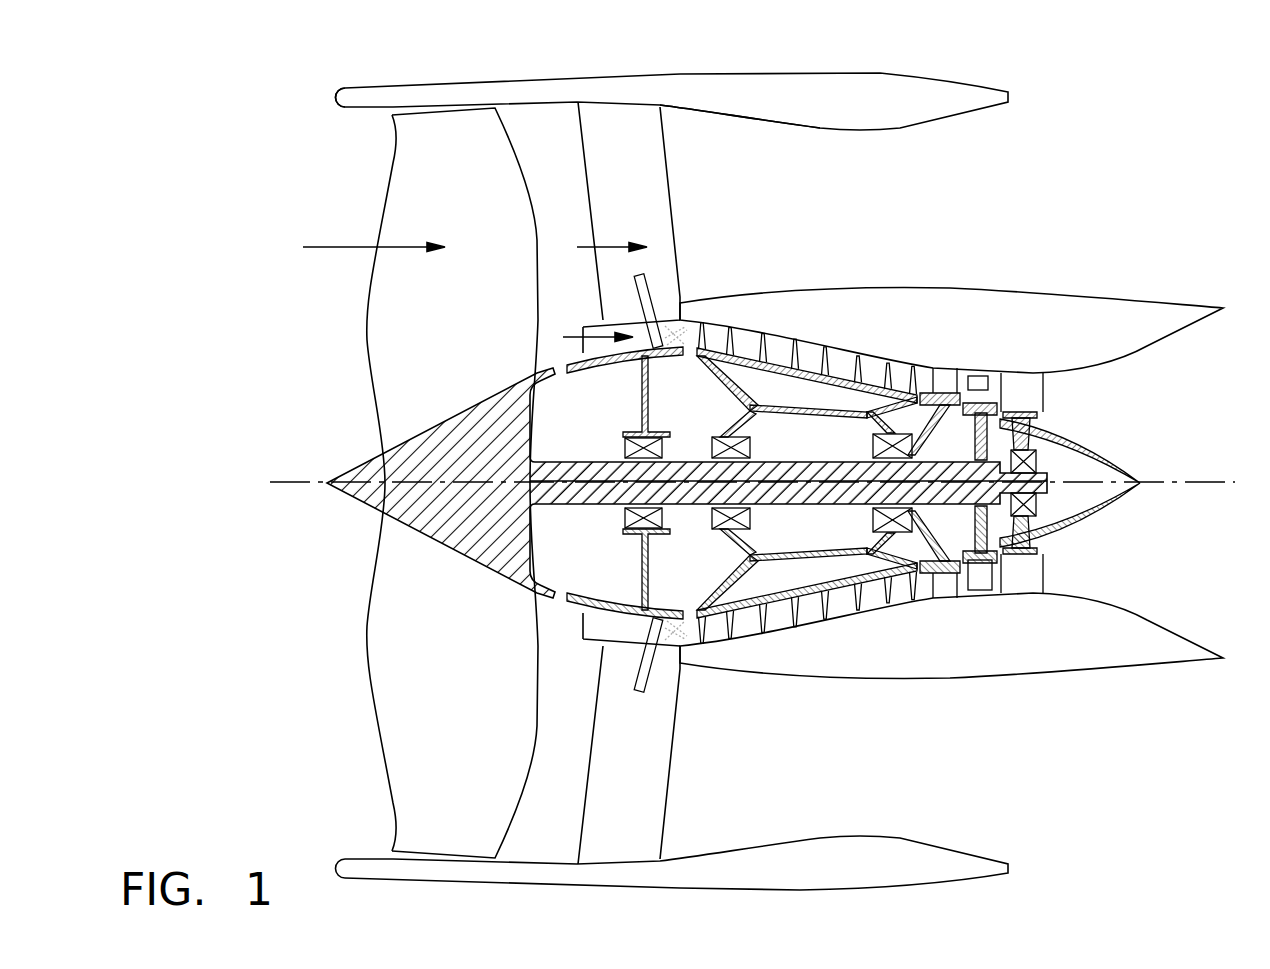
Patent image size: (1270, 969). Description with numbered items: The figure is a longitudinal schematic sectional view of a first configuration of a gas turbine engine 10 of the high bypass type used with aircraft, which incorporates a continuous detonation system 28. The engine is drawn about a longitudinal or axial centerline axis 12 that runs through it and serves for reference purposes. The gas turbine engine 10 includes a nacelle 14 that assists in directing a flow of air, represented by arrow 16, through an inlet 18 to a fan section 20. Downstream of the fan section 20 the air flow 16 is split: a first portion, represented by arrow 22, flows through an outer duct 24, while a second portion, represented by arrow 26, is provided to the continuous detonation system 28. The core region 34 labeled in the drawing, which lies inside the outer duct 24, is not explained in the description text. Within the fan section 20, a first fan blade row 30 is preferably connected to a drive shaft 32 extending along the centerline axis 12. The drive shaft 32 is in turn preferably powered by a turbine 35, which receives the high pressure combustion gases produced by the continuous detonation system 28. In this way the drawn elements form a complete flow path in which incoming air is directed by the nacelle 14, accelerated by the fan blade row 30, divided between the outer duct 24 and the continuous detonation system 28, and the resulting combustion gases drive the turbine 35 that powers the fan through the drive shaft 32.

The gas turbine engine 10 is at (1167, 137).
The longitudinal or axial centerline axis 12 is at (1150, 485).
The nacelle 14 is at (377, 90).
The flow of air 16 is at (357, 245).
The inlet 18 is at (337, 103).
The fan section 20 is at (380, 757).
The first portion of air flow 22 is at (610, 243).
The outer duct 24 is at (748, 118).
The second portion of air flow 26 is at (573, 333).
The continuous detonation system 28 is at (753, 652).
The first fan blade row 30 is at (487, 825).
The drive shaft 32 is at (590, 452).
The core engine 34 is at (800, 342).
The turbine 35 is at (1008, 413).